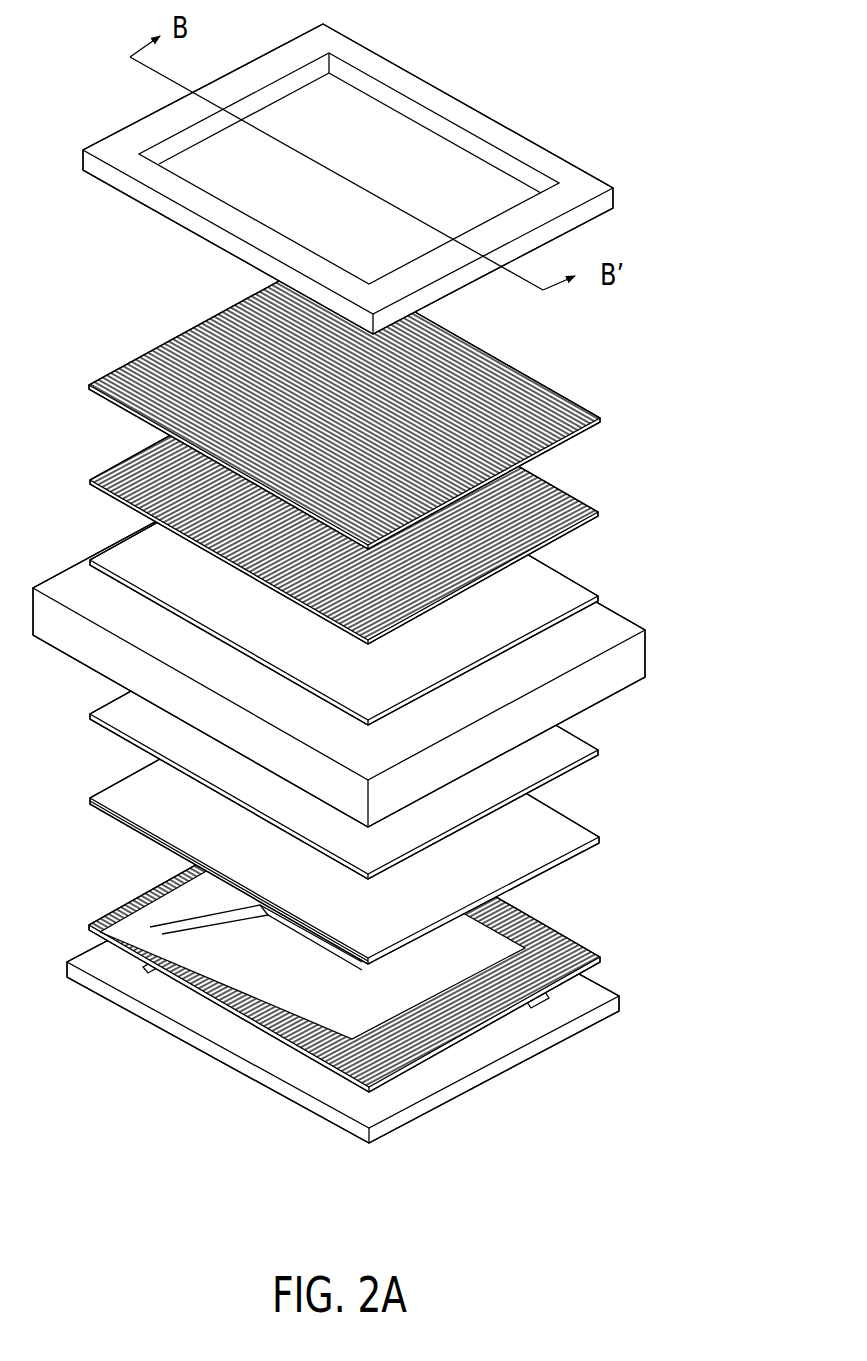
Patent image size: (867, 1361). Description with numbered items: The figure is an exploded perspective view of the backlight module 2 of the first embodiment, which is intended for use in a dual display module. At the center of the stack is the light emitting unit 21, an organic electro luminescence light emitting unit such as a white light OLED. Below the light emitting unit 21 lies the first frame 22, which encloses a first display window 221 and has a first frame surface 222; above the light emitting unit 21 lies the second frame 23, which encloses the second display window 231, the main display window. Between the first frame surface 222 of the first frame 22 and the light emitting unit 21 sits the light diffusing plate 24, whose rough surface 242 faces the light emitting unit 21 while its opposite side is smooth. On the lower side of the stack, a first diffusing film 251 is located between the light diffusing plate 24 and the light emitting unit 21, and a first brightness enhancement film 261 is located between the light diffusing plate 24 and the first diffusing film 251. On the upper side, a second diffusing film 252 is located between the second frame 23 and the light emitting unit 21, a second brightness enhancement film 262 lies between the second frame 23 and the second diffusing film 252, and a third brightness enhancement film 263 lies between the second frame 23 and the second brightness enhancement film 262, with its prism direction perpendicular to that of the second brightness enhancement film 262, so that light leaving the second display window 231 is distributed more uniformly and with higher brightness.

The backlight module 2 is at (665, 62).
The second frame 23 is at (383, 179).
The second display window 231 is at (493, 187).
The third brightness enhancement film 263 is at (600, 424).
The second brightness enhancement film 262 is at (598, 513).
The second diffusing film 252 is at (599, 598).
The light emitting unit 21 is at (635, 657).
The first diffusing film 251 is at (599, 752).
The first brightness enhancement film 261 is at (599, 838).
The rough surface 242 is at (568, 940).
The light diffusing plate 24 is at (387, 943).
The first frame 22 is at (620, 1003).
The first display window 221 is at (390, 1080).
The first frame surface 222 is at (488, 1058).